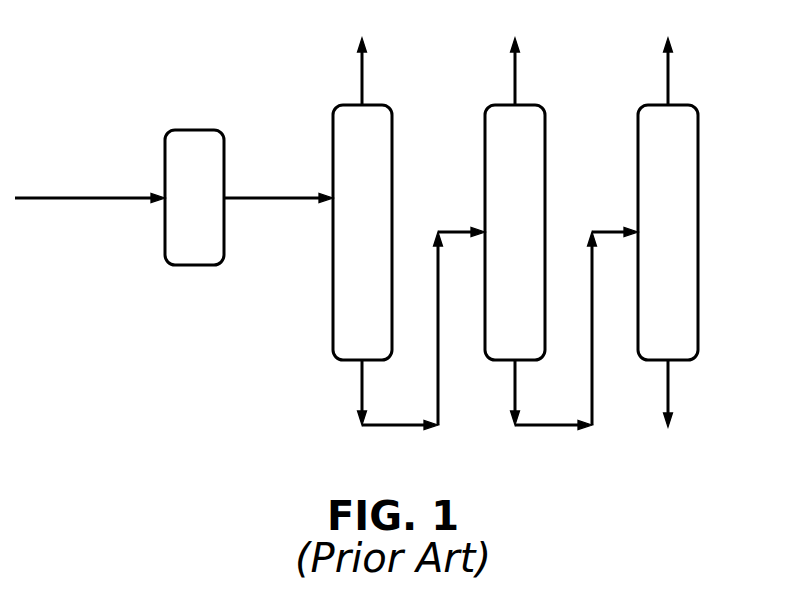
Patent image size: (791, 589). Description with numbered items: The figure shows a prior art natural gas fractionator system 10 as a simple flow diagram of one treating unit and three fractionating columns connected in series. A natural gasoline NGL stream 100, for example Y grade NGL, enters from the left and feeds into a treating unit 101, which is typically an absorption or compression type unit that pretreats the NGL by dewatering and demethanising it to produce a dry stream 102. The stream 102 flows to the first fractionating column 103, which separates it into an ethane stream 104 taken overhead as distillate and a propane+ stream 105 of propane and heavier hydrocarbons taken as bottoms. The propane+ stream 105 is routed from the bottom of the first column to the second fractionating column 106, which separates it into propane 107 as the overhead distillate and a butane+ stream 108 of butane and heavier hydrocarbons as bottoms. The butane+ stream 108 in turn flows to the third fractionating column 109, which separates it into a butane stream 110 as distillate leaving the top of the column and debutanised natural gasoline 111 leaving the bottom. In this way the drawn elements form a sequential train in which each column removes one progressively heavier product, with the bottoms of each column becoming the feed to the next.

The natural gas fractionator system 10 is at (118, 40).
The NGL stream 100 is at (45, 197).
The treating unit 101 is at (224, 150).
The stream 102 is at (265, 200).
The fractionating column 103 is at (392, 152).
The ethane stream 104 is at (362, 79).
The propane+ stream 105 is at (396, 422).
The fractionating column 106 is at (545, 152).
The propane 107 is at (515, 79).
The butane+ stream 108 is at (550, 422).
The fractionating column 109 is at (698, 152).
The butane stream 110 is at (668, 79).
The debutanised natural gasoline 111 is at (668, 380).